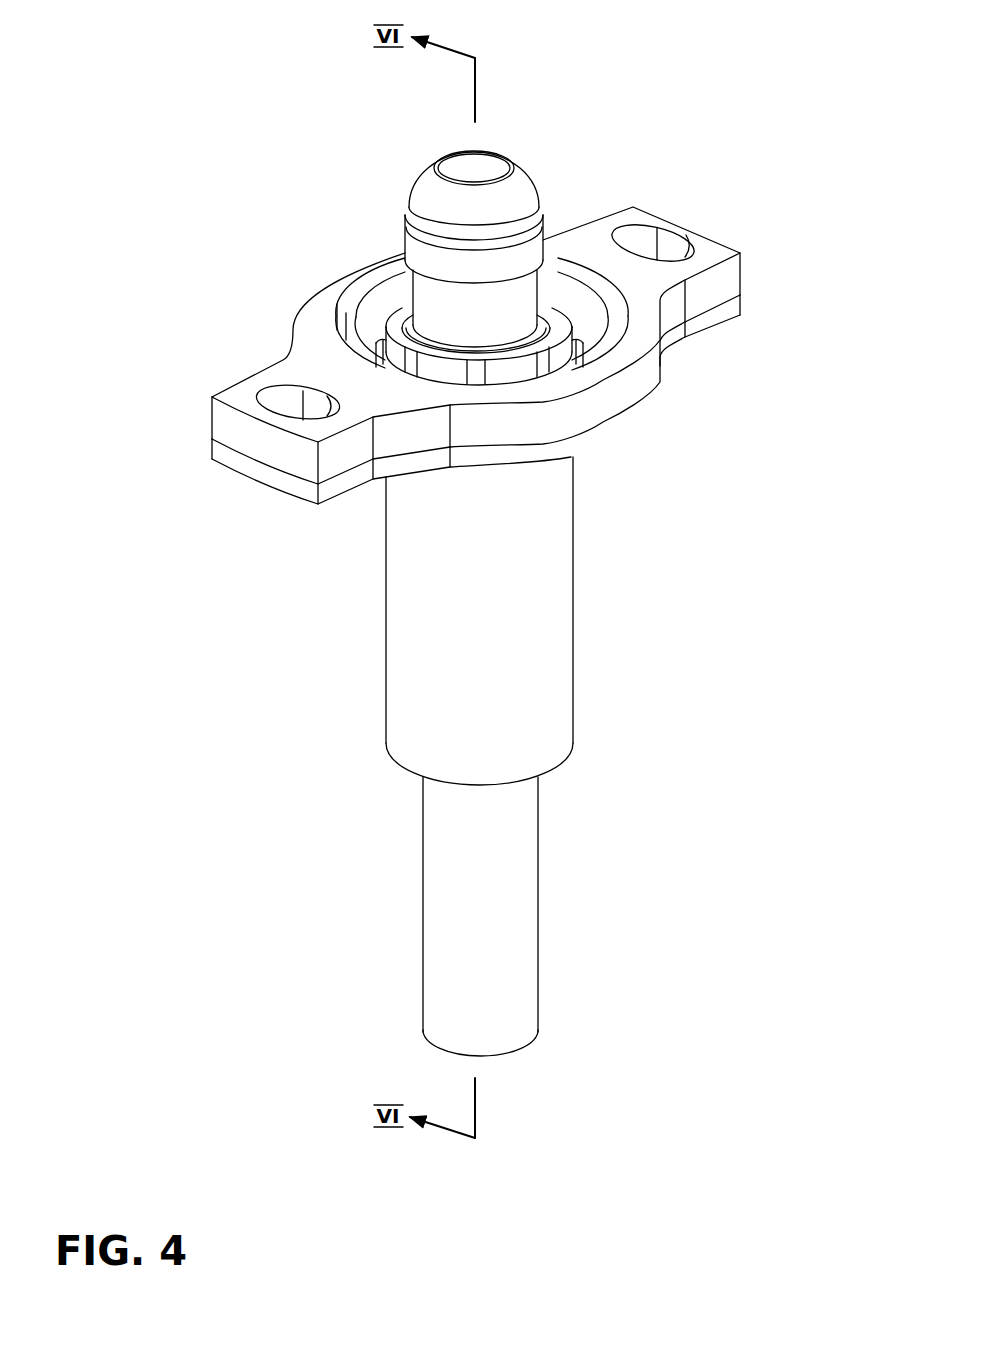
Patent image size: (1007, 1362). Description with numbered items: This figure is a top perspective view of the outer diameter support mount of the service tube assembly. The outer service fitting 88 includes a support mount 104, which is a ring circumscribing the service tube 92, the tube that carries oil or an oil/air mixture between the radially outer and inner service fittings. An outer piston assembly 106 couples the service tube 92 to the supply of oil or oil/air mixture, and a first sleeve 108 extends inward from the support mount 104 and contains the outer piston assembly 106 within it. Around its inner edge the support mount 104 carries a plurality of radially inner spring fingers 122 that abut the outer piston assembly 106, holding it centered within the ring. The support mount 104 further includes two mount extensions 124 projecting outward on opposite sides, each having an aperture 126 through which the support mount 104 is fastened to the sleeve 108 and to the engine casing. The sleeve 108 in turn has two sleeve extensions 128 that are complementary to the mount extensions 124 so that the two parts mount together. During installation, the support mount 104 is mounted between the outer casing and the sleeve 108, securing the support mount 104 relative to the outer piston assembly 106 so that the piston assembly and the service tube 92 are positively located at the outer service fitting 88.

The outer service fitting 88 is at (152, 271).
The service tube 92 is at (512, 886).
The support mount 104 is at (307, 325).
The outer piston assembly 106 is at (530, 166).
The first sleeve 108 is at (537, 651).
The radially inner spring fingers 122 is at (400, 317).
The mount extensions 124 is at (713, 252).
The aperture 126 is at (664, 245).
The sleeve extensions 128 is at (722, 315).